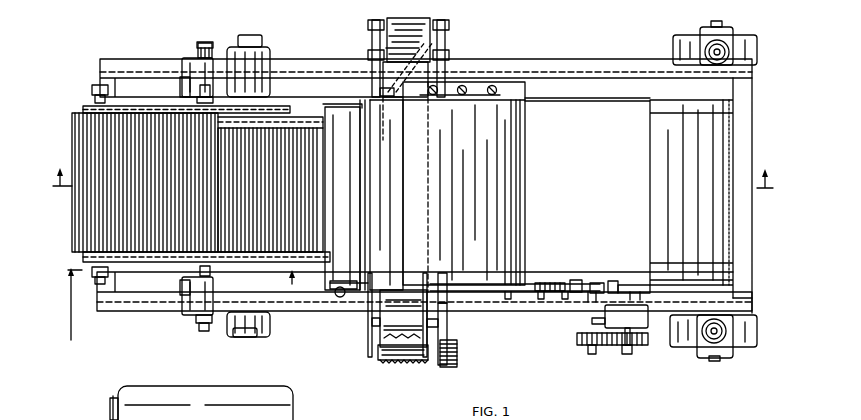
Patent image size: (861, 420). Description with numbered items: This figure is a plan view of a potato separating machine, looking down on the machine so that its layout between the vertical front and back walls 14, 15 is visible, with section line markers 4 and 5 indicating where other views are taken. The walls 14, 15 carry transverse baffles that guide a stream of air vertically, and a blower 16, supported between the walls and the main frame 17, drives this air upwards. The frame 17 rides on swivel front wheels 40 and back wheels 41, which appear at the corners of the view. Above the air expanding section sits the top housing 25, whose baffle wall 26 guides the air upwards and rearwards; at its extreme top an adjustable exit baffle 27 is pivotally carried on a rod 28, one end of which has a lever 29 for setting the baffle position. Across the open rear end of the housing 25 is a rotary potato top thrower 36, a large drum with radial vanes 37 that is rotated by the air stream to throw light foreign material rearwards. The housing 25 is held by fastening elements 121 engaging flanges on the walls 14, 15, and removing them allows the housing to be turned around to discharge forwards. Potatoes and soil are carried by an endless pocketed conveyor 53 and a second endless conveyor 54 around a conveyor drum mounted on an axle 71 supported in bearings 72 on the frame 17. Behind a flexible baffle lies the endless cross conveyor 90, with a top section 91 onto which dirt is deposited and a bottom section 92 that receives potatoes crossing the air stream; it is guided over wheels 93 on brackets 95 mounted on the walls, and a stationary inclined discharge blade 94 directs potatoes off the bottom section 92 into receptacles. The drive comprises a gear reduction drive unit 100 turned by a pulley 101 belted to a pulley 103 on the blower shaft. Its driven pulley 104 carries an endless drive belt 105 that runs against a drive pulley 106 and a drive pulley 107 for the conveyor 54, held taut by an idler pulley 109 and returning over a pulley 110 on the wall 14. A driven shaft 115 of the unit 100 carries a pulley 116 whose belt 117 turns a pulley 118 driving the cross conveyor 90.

The front wall 14 is at (140, 273).
The back wall 15 is at (129, 98).
The blower 16 is at (718, 247).
The main frame 17 is at (745, 308).
The top housing 25 is at (520, 194).
The baffle wall 26 is at (521, 212).
The adjustable exit baffle 27 is at (372, 231).
The rod 28 is at (112, 405).
The lever 29 is at (112, 412).
The rotary potato top thrower 36 is at (345, 199).
The radial vanes 37 is at (330, 181).
The swivel front wheels 40 is at (757, 52).
The back wheels 41 is at (181, 86).
The conveyor 53 is at (72, 227).
The conveyor 54 is at (278, 137).
The axle 71 is at (205, 42).
The bearings 72 is at (188, 58).
The endless cross conveyor 90 is at (412, 365).
The top section 91 is at (395, 308).
The bottom section 92 is at (385, 340).
The wheels 93 is at (392, 354).
The stationary inclined discharge blade 94 is at (430, 40).
The brackets 95 is at (372, 38).
The gear reduction drive unit 100 is at (645, 329).
The pulley 101 is at (628, 354).
The pulley 103 is at (583, 346).
The driven pulley 104 is at (652, 290).
The endless drive belt 105 is at (597, 290).
The drive pulley 106 is at (612, 290).
The drive pulley 107 is at (586, 287).
The idler pulley 109 is at (545, 283).
The pulley 110 is at (331, 295).
The driven shaft 115 is at (487, 292).
The pulley 116 is at (444, 302).
The belt 117 is at (448, 332).
The pulley 118 is at (457, 362).
The fastening elements 121 is at (494, 90).
The section line 4- 4 is at (407, 178).
The section line 5- 5 is at (185, 311).